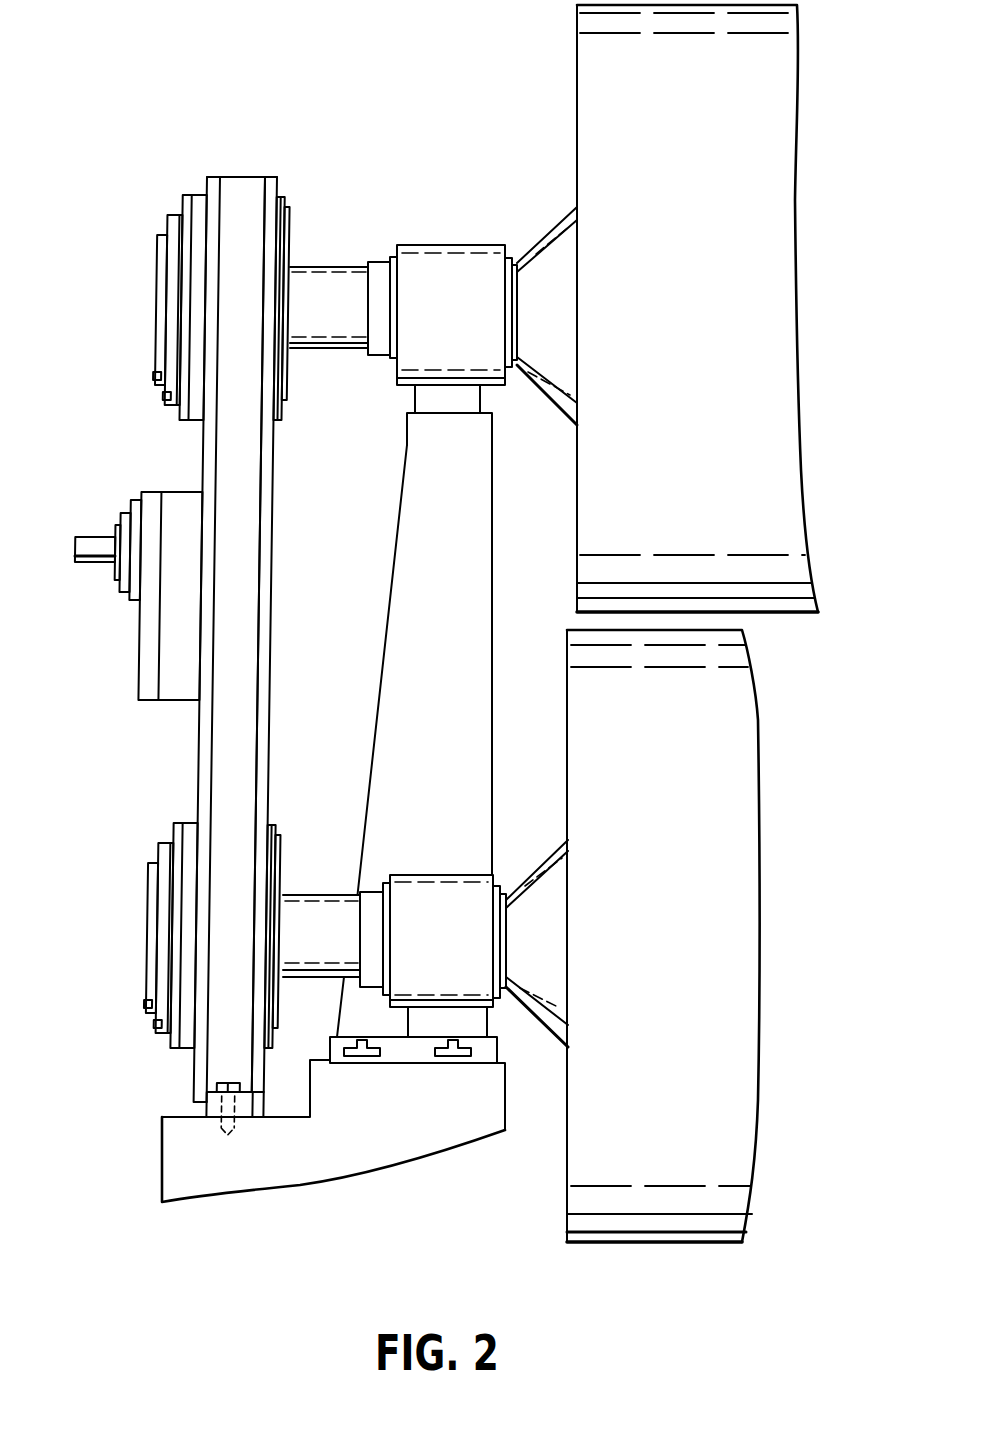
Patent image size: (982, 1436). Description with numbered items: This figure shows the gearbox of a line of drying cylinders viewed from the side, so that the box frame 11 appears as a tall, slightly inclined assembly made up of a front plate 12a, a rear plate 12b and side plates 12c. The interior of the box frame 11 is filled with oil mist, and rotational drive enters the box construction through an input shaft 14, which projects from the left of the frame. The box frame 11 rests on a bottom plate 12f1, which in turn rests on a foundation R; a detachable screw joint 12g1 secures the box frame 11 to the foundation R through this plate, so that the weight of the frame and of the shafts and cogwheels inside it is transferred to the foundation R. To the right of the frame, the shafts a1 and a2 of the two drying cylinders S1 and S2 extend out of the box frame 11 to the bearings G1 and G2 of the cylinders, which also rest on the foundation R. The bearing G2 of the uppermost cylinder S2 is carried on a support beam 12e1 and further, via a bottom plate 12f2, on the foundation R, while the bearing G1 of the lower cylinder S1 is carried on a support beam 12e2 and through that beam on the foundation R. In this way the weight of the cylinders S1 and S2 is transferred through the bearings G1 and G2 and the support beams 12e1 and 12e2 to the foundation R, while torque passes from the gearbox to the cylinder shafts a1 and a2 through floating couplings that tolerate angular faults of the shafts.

The box frame 11 is at (214, 618).
The front plate 12a is at (207, 639).
The rear plate 12b is at (264, 647).
The side plates 12c is at (235, 639).
The support beam 12e1 is at (397, 651).
The support beam 12e2 is at (470, 1023).
The bottom plate 12f1 is at (229, 1104).
The bottom plate 12f2 is at (487, 1050).
The screw joint 12g1 is at (228, 1109).
The input shaft 14 is at (70, 612).
The shaft of drying cylinder a1 is at (330, 950).
The shaft of drying cylinder a2 is at (343, 318).
The bearing G1 is at (450, 953).
The bearing G2 is at (462, 327).
The drying cylinder S1 is at (668, 895).
The drying cylinder S2 is at (655, 421).
The foundation R is at (458, 1126).